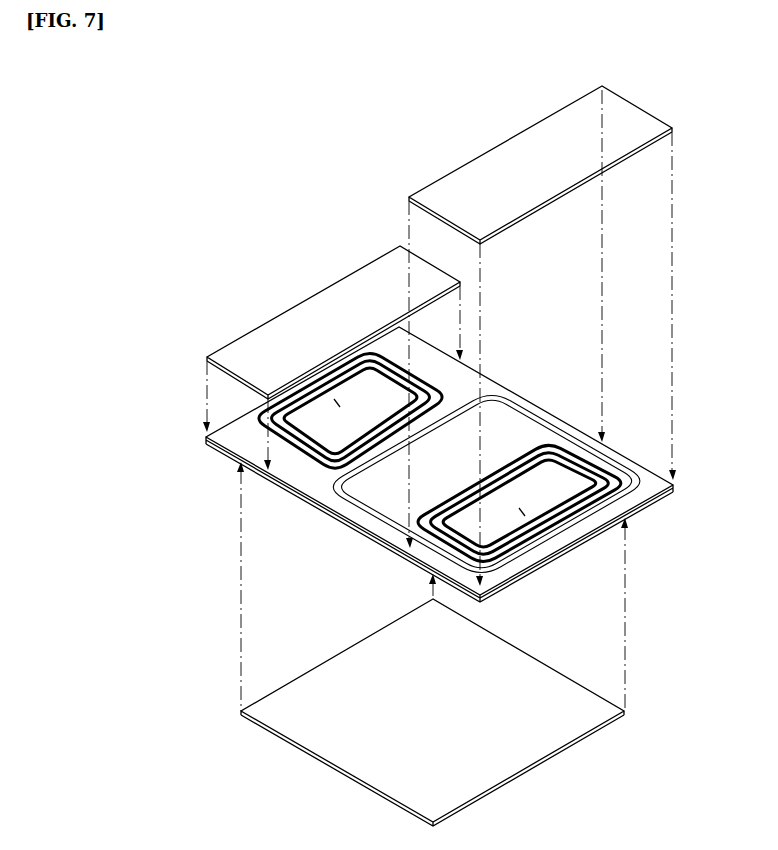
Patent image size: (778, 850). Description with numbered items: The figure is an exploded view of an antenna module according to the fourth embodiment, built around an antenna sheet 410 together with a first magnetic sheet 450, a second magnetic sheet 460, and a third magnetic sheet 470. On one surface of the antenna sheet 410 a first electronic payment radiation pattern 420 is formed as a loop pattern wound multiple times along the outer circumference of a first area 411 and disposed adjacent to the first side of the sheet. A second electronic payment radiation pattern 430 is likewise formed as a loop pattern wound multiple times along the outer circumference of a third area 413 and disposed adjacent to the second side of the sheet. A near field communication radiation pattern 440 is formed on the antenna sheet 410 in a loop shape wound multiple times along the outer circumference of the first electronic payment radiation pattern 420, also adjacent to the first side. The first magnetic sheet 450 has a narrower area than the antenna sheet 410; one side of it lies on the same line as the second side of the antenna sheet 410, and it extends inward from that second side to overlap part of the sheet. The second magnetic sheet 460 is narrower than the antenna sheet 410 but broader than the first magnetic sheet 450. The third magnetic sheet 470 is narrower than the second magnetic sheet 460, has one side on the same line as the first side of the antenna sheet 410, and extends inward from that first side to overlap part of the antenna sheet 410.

The antenna sheet 410 is at (490, 386).
The first area 411 is at (522, 512).
The third area 413 is at (337, 403).
The first electronic payment radiation pattern 420 is at (597, 462).
The second electronic payment radiation pattern 430 is at (410, 368).
The near field communication radiation pattern 440 is at (527, 400).
The first magnetic sheet 450 is at (305, 310).
The second magnetic sheet 460 is at (583, 695).
The third magnetic sheet 470 is at (503, 150).